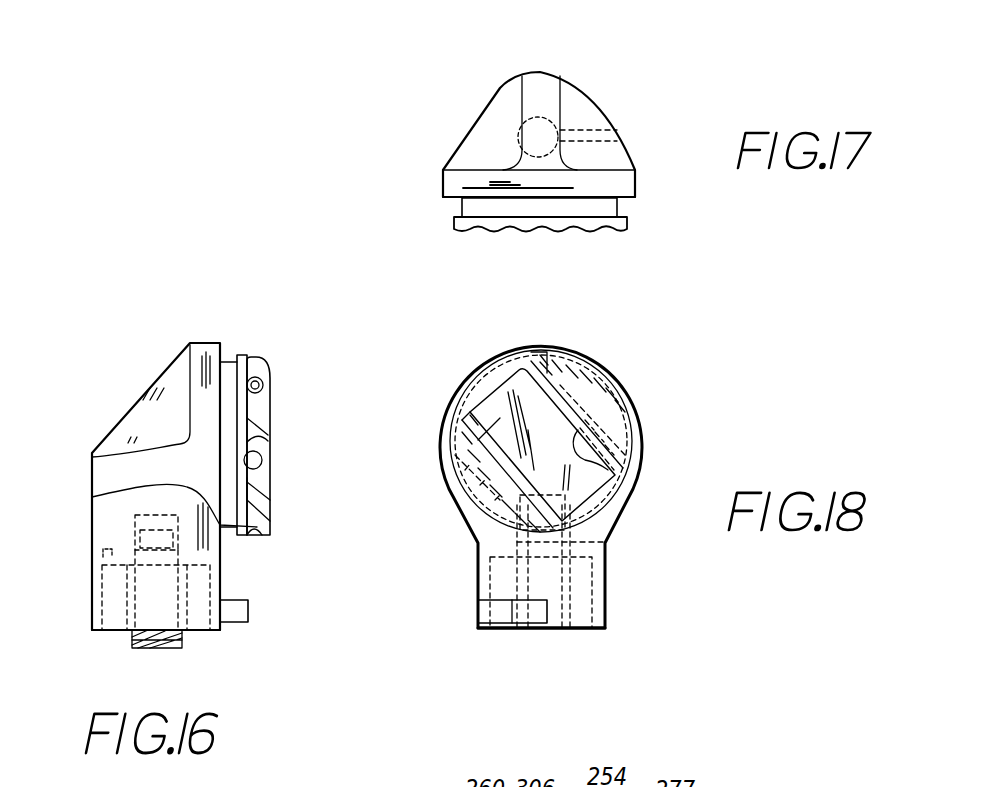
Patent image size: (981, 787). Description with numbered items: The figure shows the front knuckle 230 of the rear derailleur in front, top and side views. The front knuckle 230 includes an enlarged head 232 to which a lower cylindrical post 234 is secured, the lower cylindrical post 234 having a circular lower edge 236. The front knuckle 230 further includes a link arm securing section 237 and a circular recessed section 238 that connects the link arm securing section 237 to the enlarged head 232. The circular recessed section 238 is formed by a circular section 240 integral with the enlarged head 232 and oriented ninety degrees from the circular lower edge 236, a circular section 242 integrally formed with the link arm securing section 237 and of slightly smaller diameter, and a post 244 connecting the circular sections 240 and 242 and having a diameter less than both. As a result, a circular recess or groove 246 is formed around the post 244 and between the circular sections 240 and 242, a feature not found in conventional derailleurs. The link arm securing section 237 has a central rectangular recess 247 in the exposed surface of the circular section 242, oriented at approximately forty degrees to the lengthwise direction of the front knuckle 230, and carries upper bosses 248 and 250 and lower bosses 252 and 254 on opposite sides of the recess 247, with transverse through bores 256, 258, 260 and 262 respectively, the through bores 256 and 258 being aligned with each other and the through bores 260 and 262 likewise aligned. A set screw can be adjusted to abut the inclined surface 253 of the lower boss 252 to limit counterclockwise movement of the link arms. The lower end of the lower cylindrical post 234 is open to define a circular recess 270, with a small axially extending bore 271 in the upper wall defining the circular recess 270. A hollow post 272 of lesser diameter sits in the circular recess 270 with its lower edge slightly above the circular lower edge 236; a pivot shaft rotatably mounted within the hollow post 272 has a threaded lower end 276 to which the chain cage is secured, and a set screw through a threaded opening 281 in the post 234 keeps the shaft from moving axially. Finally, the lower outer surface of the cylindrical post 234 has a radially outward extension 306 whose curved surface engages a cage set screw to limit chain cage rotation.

In FIG. 17, the front knuckle 230 is at (462, 123).
In FIG. 17, the enlarged head 232 is at (533, 78).
In FIG. 16, the enlarged head 232 is at (187, 341).
In FIG. 18, the enlarged head 232 is at (638, 393).
In FIG. 16, the lower cylindrical post 234 is at (110, 572).
In FIG. 18, the lower cylindrical post 234 is at (607, 597).
In FIG. 16, the circular lower edge 236 is at (100, 632).
In FIG. 18, the circular lower edge 236 is at (575, 633).
In FIG. 18, the link arm securing section 237 is at (500, 368).
In FIG. 17, the circular recessed section 238 is at (455, 208).
In FIG. 16, the circular recessed section 238 is at (208, 330).
In FIG. 17, the circular section 240 is at (628, 183).
In FIG. 16, the circular section 240 is at (200, 390).
In FIG. 18, the circular section 240 is at (640, 428).
In FIG. 17, the circular section 242 is at (633, 221).
In FIG. 16, the circular section 242 is at (243, 418).
In FIG. 18, the circular section 242 is at (597, 367).
In FIG. 17, the post 244 is at (620, 207).
In FIG. 16, the post 244 is at (228, 533).
In FIG. 18, the post 244 is at (463, 382).
In FIG. 16, the circular recess or groove 246 is at (232, 356).
In FIG. 18, the central rectangular recess 247 is at (605, 470).
In FIG. 16, the upper boss 248 is at (268, 431).
In FIG. 18, the upper boss 248 is at (462, 478).
In FIG. 16, the upper boss 250 is at (272, 372).
In FIG. 18, the upper boss 250 is at (552, 353).
In FIG. 16, the lower boss 252 is at (280, 525).
In FIG. 18, the lower boss 252 is at (497, 503).
In FIG. 16, the inclined surface 253 is at (267, 490).
In FIG. 18, the inclined surface 253 is at (503, 480).
In FIG. 18, the lower boss 254 is at (600, 403).
In FIG. 16, the transverse through bore 256 is at (253, 460).
In FIG. 18, the transverse through bore 256 is at (470, 423).
In FIG. 16, the transverse through bore 258 is at (253, 385).
In FIG. 18, the transverse through bore 258 is at (537, 360).
In FIG. 16, the transverse through bore 260 is at (92, 497).
In FIG. 18, the transverse through bore 260 is at (490, 510).
In FIG. 18, the transverse through bore 262 is at (640, 448).
In FIG. 16, the circular recess 270 is at (203, 632).
In FIG. 16, the axially extending bore 271 is at (110, 580).
In FIG. 16, the hollow post 272 is at (120, 632).
In FIG. 16, the threaded lower end 276 is at (170, 648).
In FIG. 18, the threaded opening 281 is at (610, 527).
In FIG. 16, the extension 306 is at (250, 622).
In FIG. 18, the extension 306 is at (535, 617).